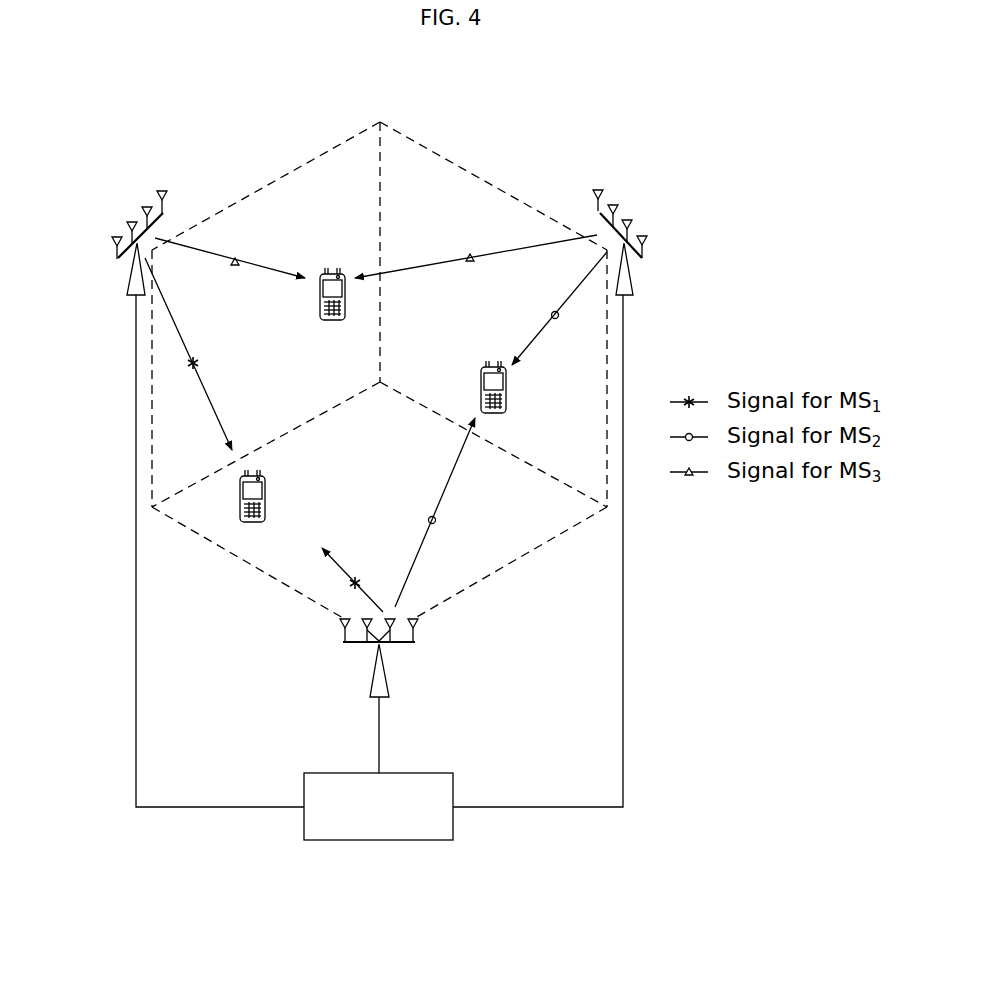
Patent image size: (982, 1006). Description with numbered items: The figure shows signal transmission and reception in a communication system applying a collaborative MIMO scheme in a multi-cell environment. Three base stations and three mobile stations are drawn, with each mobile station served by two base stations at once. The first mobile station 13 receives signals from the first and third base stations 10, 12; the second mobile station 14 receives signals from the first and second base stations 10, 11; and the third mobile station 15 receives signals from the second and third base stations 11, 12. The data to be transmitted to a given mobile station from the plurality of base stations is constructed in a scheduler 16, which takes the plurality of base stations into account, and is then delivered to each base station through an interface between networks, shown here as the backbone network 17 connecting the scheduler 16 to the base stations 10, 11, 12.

The base station BS1 10 is at (440, 680).
The base station BS2 11 is at (678, 278).
The base station BS3 12 is at (98, 318).
The mobile station MS1 13 is at (318, 509).
The mobile station MS2 14 is at (532, 392).
The mobile station MS3 15 is at (292, 222).
The scheduler 16 is at (437, 832).
The backbone network 17 is at (683, 800).